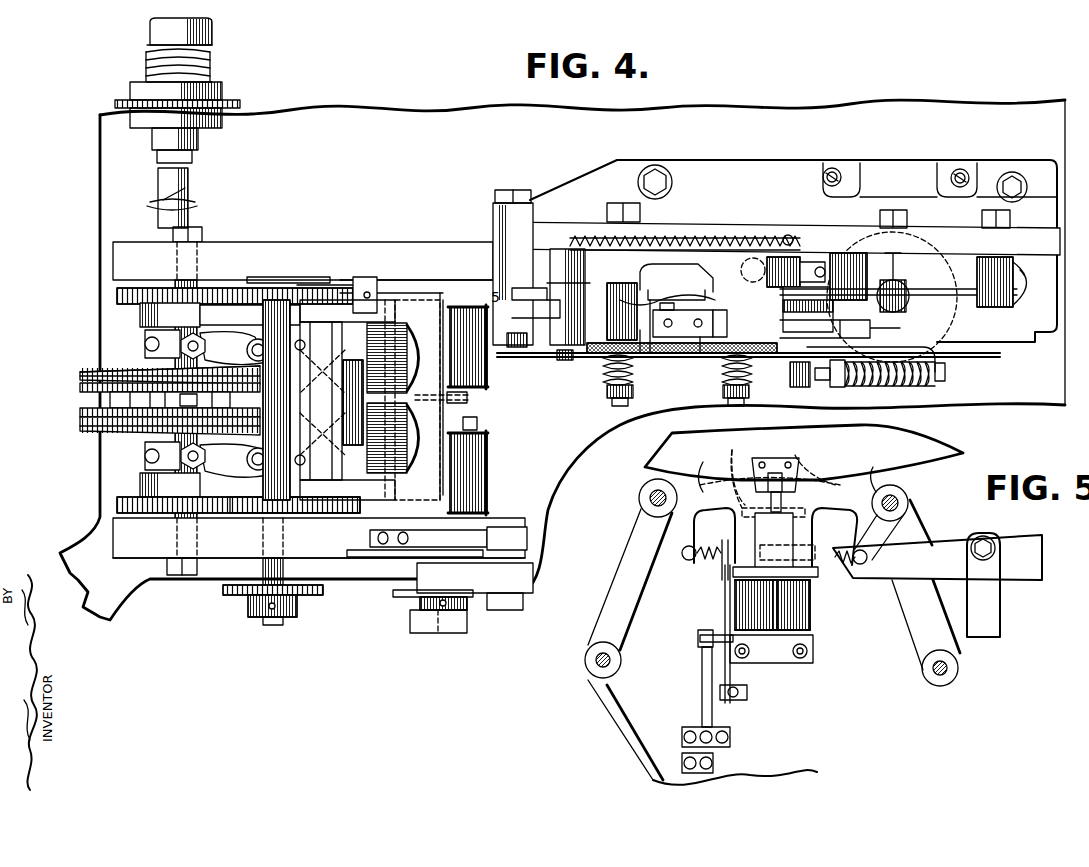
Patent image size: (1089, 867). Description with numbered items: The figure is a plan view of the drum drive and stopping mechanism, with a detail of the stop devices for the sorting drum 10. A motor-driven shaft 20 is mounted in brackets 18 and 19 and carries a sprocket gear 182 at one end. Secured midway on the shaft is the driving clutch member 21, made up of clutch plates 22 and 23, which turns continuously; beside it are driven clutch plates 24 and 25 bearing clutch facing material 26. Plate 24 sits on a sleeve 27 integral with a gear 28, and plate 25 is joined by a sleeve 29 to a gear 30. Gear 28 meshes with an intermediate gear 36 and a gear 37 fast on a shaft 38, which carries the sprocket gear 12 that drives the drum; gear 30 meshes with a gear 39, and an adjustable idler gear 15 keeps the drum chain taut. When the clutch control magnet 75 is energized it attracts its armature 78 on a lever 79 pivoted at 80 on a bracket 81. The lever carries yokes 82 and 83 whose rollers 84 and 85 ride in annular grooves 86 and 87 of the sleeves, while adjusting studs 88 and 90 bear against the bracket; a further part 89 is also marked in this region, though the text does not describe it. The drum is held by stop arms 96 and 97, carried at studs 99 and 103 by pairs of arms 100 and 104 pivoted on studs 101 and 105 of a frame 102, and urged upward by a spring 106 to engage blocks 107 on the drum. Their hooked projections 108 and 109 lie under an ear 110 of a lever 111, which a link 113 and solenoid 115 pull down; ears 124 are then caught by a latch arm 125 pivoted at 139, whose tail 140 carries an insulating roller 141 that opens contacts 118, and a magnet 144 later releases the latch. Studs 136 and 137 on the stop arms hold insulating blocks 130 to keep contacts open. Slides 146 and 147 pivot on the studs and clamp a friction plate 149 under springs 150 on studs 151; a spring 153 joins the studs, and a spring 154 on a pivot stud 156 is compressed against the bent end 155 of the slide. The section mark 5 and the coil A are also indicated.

In FIG. 4, the sprocket gear 182 is at (224, 104).
In FIG. 4, the shaft 20 is at (190, 186).
In FIG. 4, the bracket 18 is at (123, 251).
In FIG. 4, the gear 28 is at (117, 293).
In FIG. 4, the sleeve 27 is at (150, 313).
In FIG. 4, the gear 37 is at (322, 298).
In FIG. 4, the intermediate gear 36 is at (250, 315).
In FIG. 4, the yoke 83 is at (248, 325).
In FIG. 4, the annular groove 87 is at (150, 341).
In FIG. 4, the roller 85 is at (181, 347).
In FIG. 4, the driven clutch plate 24 is at (86, 370).
In FIG. 4, the clutch facing material 26 is at (80, 375).
In FIG. 4, the clutch plate 22 is at (86, 390).
In FIG. 4, the driving clutch member 21 is at (110, 401).
In FIG. 4, the clutch plate 23 is at (82, 412).
In FIG. 4, the driven clutch plate 25 is at (84, 432).
In FIG. 4, the annular groove 86 is at (150, 455).
In FIG. 4, the roller 84 is at (181, 458).
In FIG. 4, the sleeve 29 is at (150, 485).
In FIG. 4, the bracket 81 is at (295, 360).
In FIG. 4, the support 89 is at (331, 397).
In FIG. 4, the shaft 38 is at (275, 400).
In FIG. 4, the pivot 80 is at (295, 444).
In FIG. 4, the adjusting stud 88 is at (322, 434).
In FIG. 4, the yoke 82 is at (222, 455).
In FIG. 4, the gear 30 is at (115, 504).
In FIG. 4, the gear 39 is at (236, 514).
In FIG. 4, the bracket 19 is at (120, 561).
In FIG. 4, the sprocket gear 12 is at (305, 594).
In FIG. 4, the adjustable idler gear 15 is at (395, 598).
In FIG. 4, the adjusting stud 90 is at (472, 372).
In FIG. 4, the lever 79 is at (468, 400).
In FIG. 4, the armature 78 is at (478, 425).
In FIG. 4, the clutch control magnet 75 is at (470, 463).
In FIG. 4, the stud 99 is at (565, 235).
In FIG. 5, the stud 99 is at (648, 498).
In FIG. 4, the latch arm 125 is at (660, 262).
In FIG. 5, the latch arm 125 is at (812, 528).
In FIG. 4, the ear 124 is at (700, 280).
In FIG. 5, the ear 124 is at (733, 468).
In FIG. 4, the spring 153 is at (745, 258).
In FIG. 4, the stud 103 is at (790, 235).
In FIG. 5, the stud 103 is at (900, 500).
In FIG. 4, the frame 102 is at (812, 235).
In FIG. 5, the frame 102 is at (636, 714).
In FIG. 4, the arm 104 is at (860, 258).
In FIG. 5, the arm 104 is at (912, 612).
In FIG. 4, the stop arm 97 is at (780, 300).
In FIG. 5, the stop arm 97 is at (850, 484).
In FIG. 4, the link 113 is at (903, 292).
In FIG. 5, the link 113 is at (990, 602).
In FIG. 4, the lever 111 is at (945, 305).
In FIG. 5, the lever 111 is at (936, 545).
In FIG. 4, the solenoid 115 is at (960, 325).
In FIG. 4, the arm 100 is at (544, 313).
In FIG. 5, the arm 100 is at (628, 608).
In FIG. 4, the stop arm 96 is at (615, 300).
In FIG. 5, the stop arm 96 is at (689, 472).
In FIG. 4, the ear 110 is at (690, 292).
In FIG. 5, the ear 110 is at (815, 540).
In FIG. 4, the stud 136 is at (660, 318).
In FIG. 4, the block of insulating material 130 is at (660, 338).
In FIG. 4, the stud 137 is at (740, 322).
In FIG. 4, the spring 150 is at (603, 366).
In FIG. 4, the slide 147 is at (660, 355).
In FIG. 4, the slide 146 is at (650, 358).
In FIG. 4, the friction plate 149 is at (700, 358).
In FIG. 4, the stud 151 is at (612, 403).
In FIG. 4, the bent end 155 is at (940, 357).
In FIG. 4, the pivot stud 156 is at (946, 372).
In FIG. 4, the spring 154 is at (900, 388).
In FIG. 4, the section line 5 is at (920, 328).
In FIG. 5, the sorting drum 10 is at (645, 464).
In FIG. 5, the block 107 is at (780, 460).
In FIG. 5, the hooked projection 108 is at (738, 508).
In FIG. 5, the spring 106 is at (700, 573).
In FIG. 5, the pivot 139 is at (722, 570).
In FIG. 5, the tail 140 is at (726, 596).
In FIG. 5, the hooked projection 109 is at (805, 570).
In FIG. 5, the coil A is at (800, 612).
In FIG. 5, the magnet 144 is at (810, 612).
In FIG. 5, the stud 101 is at (594, 660).
In FIG. 5, the insulating roller 141 is at (700, 645).
In FIG. 5, the contacts 118 is at (702, 665).
In FIG. 5, the stud 105 is at (932, 677).